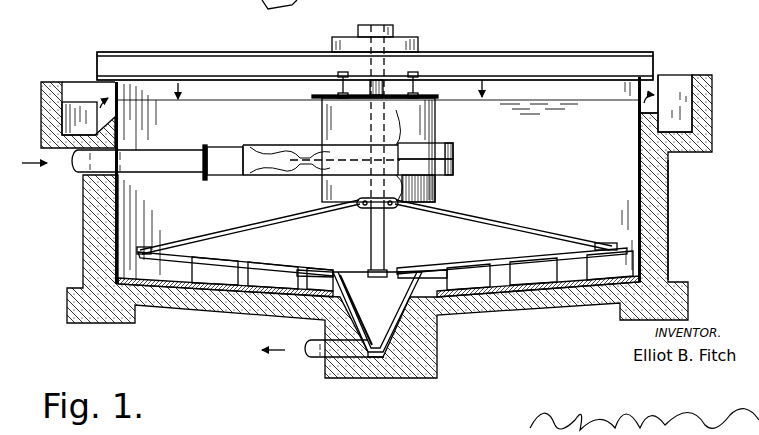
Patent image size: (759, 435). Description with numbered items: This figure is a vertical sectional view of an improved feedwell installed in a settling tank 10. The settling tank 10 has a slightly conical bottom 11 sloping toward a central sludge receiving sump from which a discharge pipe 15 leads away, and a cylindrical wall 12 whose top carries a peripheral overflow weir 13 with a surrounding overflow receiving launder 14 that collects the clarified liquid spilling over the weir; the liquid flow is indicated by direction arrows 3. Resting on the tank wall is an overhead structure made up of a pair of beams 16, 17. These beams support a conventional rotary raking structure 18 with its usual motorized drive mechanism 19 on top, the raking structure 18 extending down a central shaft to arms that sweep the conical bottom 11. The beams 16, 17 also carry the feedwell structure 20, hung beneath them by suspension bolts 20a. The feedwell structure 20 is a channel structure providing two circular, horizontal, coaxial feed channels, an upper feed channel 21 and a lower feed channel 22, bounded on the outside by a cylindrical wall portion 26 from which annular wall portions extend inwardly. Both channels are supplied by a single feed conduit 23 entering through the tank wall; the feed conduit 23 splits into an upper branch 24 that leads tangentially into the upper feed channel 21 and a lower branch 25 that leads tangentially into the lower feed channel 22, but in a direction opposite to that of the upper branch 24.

The flow arrows / direction of liquid flow 3 is at (330, 103).
The settling tank 10 is at (675, 194).
The conical bottom 11 is at (538, 300).
The cylindrical wall 12 is at (667, 228).
The peripheral overflow weir 13 is at (637, 106).
The overflow receiving launder 14 is at (683, 92).
The discharge pipe 15 is at (313, 356).
The beam 16 is at (553, 47).
The beam 17 is at (375, 41).
The rotary raking structure 18 is at (392, 244).
The motorized drive mechanism 19 is at (410, 36).
The feedwell structure 20 is at (316, 137).
The suspension bolts 20a is at (340, 81).
The upper feed channel 21 is at (455, 148).
The lower feed channel 22 is at (446, 176).
The feed conduit 23 is at (177, 173).
The upper branch 24 is at (272, 150).
The lower branch 25 is at (275, 172).
The cylindrical wall portion 26 is at (455, 163).